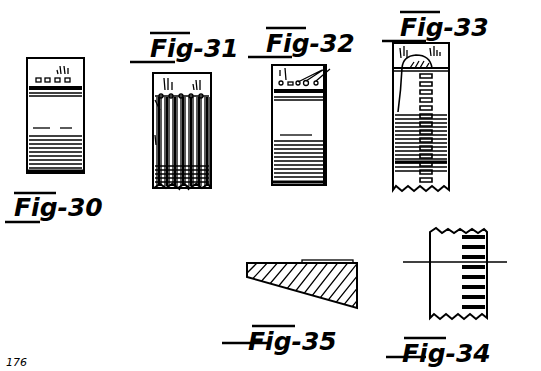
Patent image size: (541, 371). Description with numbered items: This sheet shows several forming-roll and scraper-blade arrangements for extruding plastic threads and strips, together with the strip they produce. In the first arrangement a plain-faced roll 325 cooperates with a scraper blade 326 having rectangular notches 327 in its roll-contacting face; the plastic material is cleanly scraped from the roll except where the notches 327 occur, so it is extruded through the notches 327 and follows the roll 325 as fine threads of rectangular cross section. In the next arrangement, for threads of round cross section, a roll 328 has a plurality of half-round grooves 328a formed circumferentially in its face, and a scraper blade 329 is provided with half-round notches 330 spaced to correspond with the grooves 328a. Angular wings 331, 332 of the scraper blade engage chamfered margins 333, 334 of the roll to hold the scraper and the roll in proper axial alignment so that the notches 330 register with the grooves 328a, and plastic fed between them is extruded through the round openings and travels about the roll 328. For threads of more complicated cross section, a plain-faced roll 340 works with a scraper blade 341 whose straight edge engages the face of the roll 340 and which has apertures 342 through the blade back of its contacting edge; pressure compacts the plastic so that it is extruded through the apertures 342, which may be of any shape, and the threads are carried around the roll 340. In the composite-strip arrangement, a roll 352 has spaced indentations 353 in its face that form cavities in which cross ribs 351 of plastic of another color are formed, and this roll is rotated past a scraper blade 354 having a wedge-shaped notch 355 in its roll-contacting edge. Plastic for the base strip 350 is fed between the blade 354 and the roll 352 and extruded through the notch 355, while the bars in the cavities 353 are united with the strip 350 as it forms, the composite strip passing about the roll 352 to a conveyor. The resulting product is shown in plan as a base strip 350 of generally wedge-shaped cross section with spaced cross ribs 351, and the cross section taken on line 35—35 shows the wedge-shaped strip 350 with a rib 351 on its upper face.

In FIG. 30, the plain-faced roll 325 is at (86, 128).
In FIG. 30, the scraper blade 326 is at (67, 74).
In FIG. 30, the rectangular notches 327 is at (54, 78).
In FIG. 31, the roll 328 is at (212, 176).
In FIG. 31, the half-round grooves 328a is at (189, 190).
In FIG. 31, the scraper blade 329 is at (212, 82).
In FIG. 31, the half-round notches 330 is at (186, 96).
In FIG. 31, the angular wing 331 is at (213, 95).
In FIG. 31, the angular wing 332 is at (154, 100).
In FIG. 31, the chamfered margin 333 is at (213, 146).
In FIG. 31, the chamfered margin 334 is at (155, 140).
In FIG. 32, the plain-faced roll 340 is at (312, 139).
In FIG. 32, the scraper blade 341 is at (327, 85).
In FIG. 32, the apertures 342 is at (330, 68).
In FIG. 33, the roll 352 is at (446, 146).
In FIG. 33, the indentations 353 is at (433, 100).
In FIG. 33, the scraper blade 354 is at (446, 50).
In FIG. 33, the wedge-shaped notch 355 is at (398, 108).
In FIG. 35, the base strip 350 is at (247, 274).
In FIG. 35, the cross ribs 351 is at (328, 260).
In FIG. 34, the section line 35— 35 is at (412, 240).